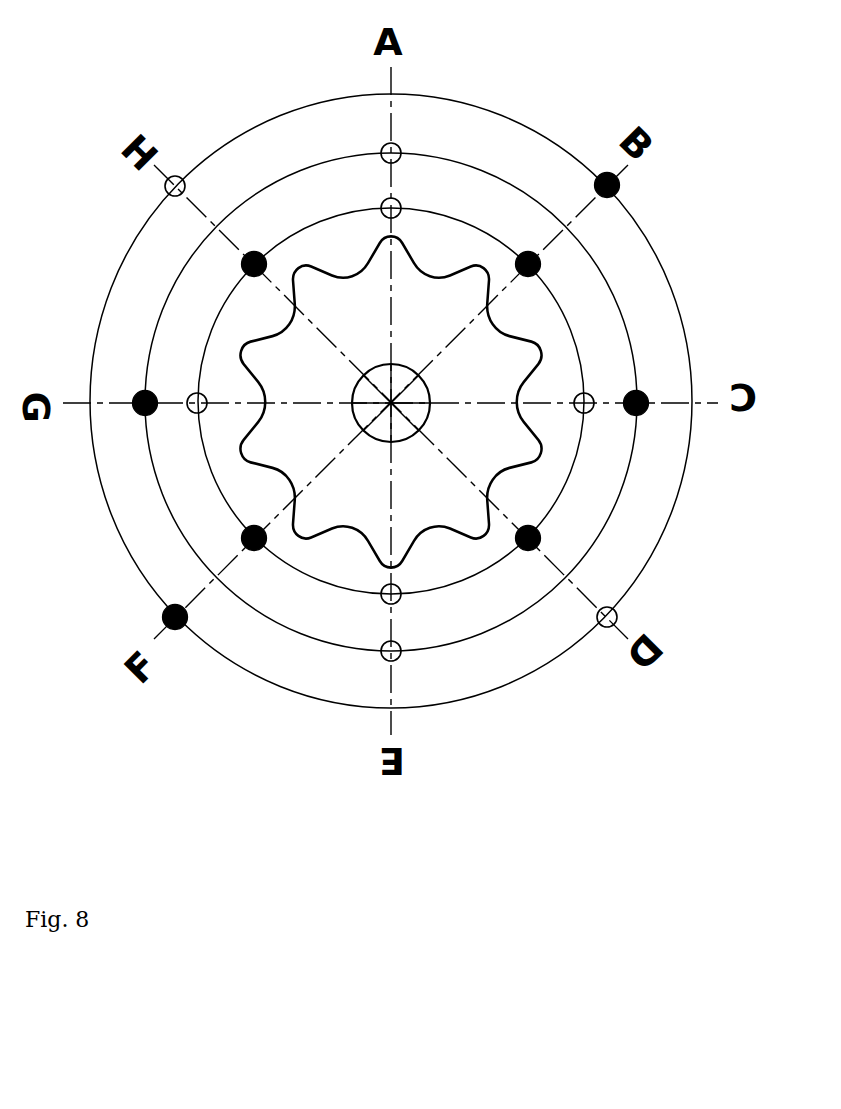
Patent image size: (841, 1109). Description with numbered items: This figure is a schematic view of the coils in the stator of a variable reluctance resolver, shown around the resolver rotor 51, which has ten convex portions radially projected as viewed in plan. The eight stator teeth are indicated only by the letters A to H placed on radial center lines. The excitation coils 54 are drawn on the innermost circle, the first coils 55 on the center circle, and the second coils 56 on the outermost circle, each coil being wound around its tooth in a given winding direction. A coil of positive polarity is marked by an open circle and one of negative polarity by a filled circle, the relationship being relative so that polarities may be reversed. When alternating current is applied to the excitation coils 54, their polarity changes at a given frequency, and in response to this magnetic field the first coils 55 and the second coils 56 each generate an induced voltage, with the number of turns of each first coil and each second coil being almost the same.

The resolver rotor 51 is at (489, 276).
The excitation coils 54 is at (421, 209).
The first coils 55 is at (517, 188).
The second coils 56 is at (585, 240).